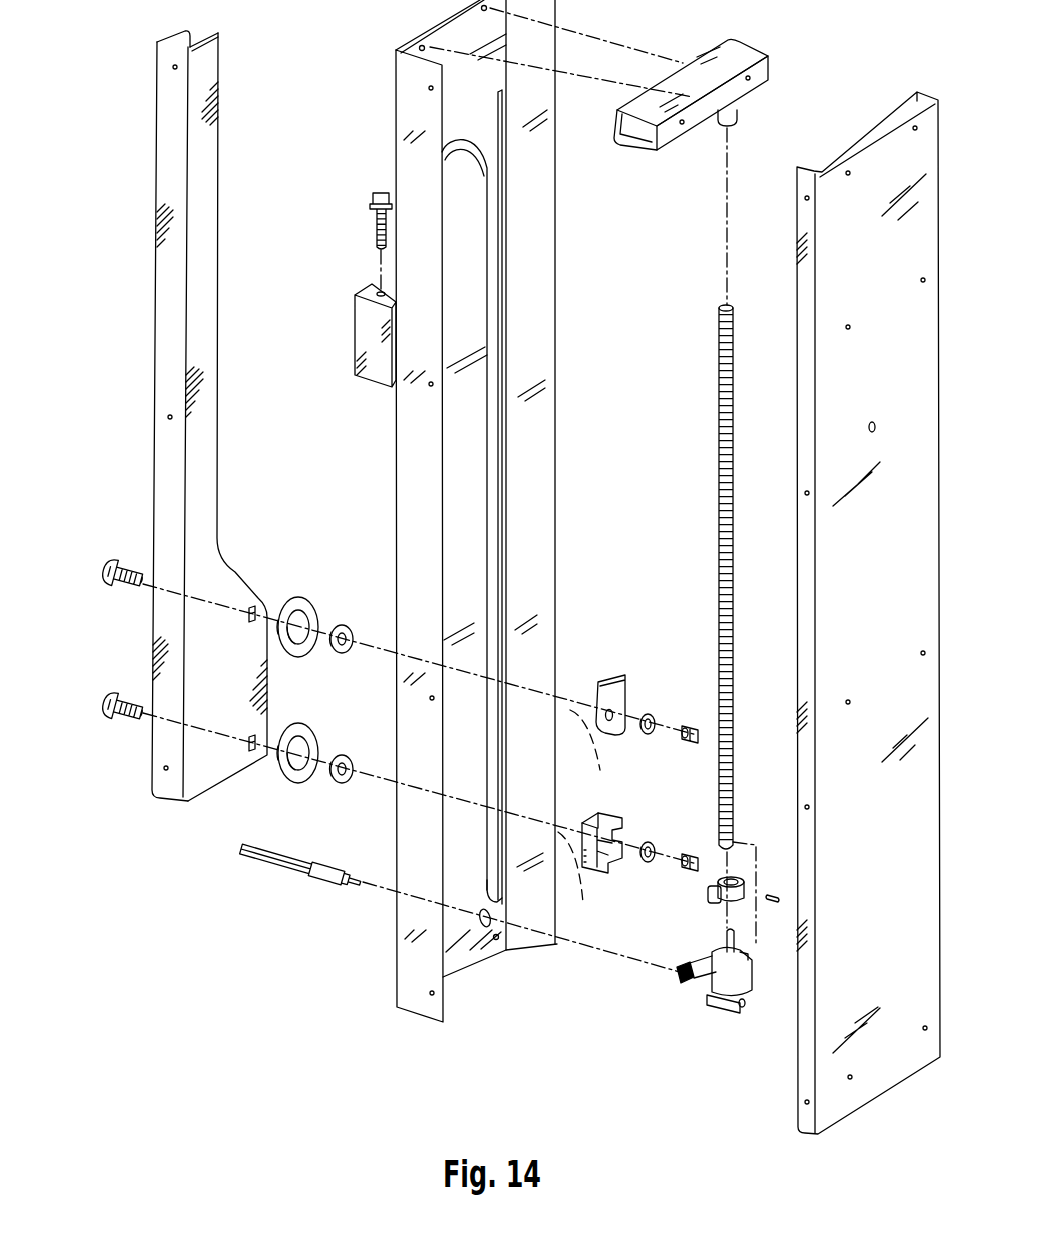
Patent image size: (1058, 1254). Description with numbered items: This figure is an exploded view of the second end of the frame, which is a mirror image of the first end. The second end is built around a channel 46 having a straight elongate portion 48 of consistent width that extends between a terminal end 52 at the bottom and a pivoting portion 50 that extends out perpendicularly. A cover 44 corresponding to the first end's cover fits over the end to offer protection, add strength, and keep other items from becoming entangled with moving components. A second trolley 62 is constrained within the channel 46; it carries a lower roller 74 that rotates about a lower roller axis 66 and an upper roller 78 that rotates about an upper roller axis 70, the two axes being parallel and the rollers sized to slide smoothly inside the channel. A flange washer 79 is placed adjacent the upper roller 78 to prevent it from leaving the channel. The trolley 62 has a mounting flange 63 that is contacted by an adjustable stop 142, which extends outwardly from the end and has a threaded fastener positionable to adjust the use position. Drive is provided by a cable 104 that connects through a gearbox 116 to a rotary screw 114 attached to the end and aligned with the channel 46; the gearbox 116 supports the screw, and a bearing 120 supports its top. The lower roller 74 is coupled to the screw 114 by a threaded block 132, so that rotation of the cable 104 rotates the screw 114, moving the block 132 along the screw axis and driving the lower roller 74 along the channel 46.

The cover 44 is at (900, 136).
The channel 46 is at (483, 511).
The elongate portion 48 is at (493, 502).
The pivoting portion 50 is at (480, 127).
The terminal end 52 is at (490, 897).
The second trolley 62 is at (198, 256).
The mounting flange 63 is at (168, 338).
The lower roller axis 66 is at (579, 823).
The upper roller axis 70 is at (640, 823).
The lower roller 74 is at (340, 754).
The upper roller 78 is at (343, 624).
The flange washer 79 is at (620, 692).
The cable 104 is at (272, 862).
The rotary screw 114 is at (718, 500).
The gearbox 116 is at (705, 983).
The bearing 120 is at (737, 112).
The threaded block 132 is at (713, 893).
The adjustable stop 142 is at (363, 330).